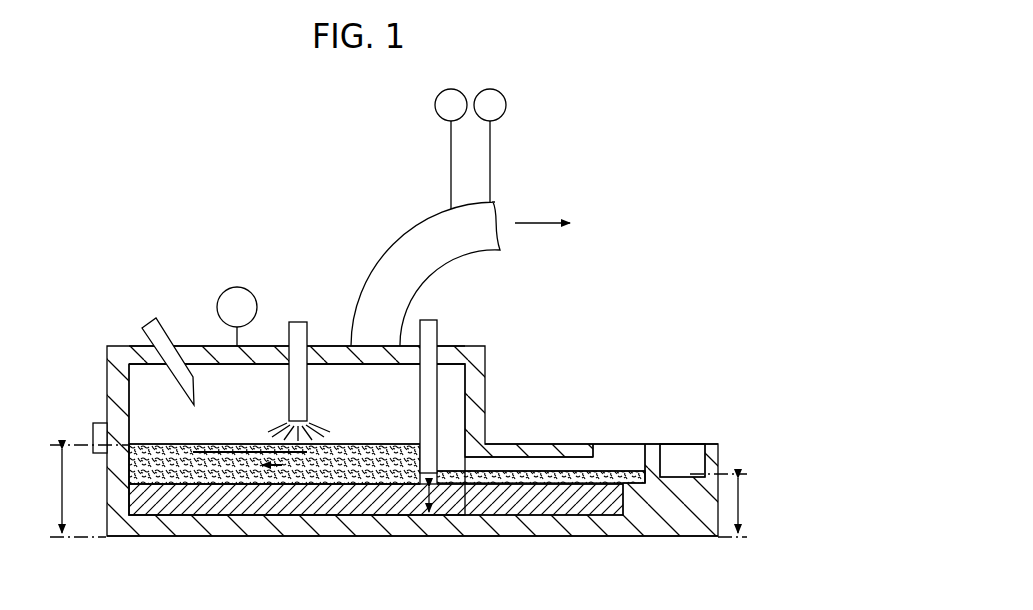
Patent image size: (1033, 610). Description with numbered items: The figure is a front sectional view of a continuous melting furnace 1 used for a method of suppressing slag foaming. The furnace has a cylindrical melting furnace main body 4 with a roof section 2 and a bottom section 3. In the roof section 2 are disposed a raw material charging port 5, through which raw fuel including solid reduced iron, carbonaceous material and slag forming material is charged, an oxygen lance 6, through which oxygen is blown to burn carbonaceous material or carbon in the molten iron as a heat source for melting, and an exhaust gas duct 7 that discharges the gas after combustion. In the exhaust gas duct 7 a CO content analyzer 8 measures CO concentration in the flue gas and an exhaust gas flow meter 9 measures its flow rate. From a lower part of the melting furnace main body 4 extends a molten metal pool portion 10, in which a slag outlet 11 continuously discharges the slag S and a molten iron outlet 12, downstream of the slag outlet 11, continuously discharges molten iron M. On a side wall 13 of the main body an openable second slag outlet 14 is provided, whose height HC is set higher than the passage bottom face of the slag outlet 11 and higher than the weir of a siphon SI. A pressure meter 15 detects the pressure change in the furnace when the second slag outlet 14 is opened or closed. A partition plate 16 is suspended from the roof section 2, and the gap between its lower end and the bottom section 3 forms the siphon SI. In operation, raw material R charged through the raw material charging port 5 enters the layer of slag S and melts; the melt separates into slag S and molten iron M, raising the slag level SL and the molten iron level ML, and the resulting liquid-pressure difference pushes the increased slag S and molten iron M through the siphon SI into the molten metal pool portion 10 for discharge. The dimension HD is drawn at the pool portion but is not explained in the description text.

The continuous melting furnace 1 is at (126, 206).
The roof section 2 is at (336, 374).
The bottom section 3 is at (367, 505).
The melting furnace main body 4 is at (207, 346).
The raw material charging port 5 is at (158, 314).
The oxygen lance 6 is at (300, 322).
The exhaust gas duct 7 is at (387, 247).
The CO content analyzer 8 is at (434, 105).
The exhaust gas flow meter 9 is at (506, 105).
The molten metal pool portion 10 is at (538, 460).
The slag outlet 11 is at (613, 450).
The molten iron outlet 12 is at (680, 450).
The side wall 13 is at (107, 376).
The second slag outlet 14 is at (92, 436).
The pressure meter 15 is at (237, 287).
The partition plate 16 is at (440, 330).
The slag level SL is at (160, 443).
The molten iron level ML is at (177, 487).
The molten iron M is at (292, 503).
The slag S is at (391, 443).
The raw material R is at (222, 423).
The siphon SI is at (437, 490).
The height of the second slag outlet HC is at (81, 491).
The discharge height HD is at (728, 505).